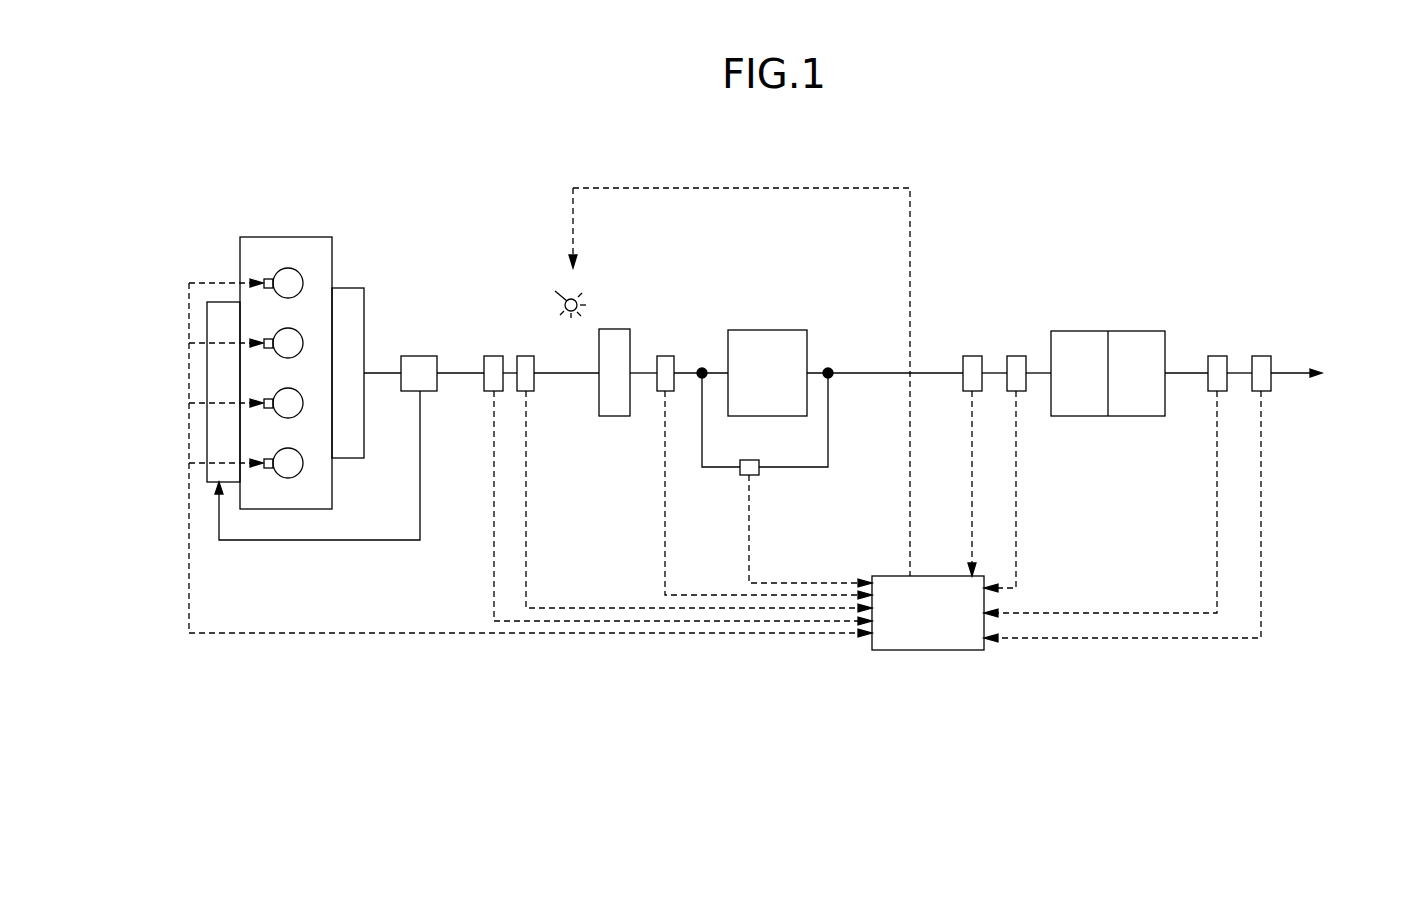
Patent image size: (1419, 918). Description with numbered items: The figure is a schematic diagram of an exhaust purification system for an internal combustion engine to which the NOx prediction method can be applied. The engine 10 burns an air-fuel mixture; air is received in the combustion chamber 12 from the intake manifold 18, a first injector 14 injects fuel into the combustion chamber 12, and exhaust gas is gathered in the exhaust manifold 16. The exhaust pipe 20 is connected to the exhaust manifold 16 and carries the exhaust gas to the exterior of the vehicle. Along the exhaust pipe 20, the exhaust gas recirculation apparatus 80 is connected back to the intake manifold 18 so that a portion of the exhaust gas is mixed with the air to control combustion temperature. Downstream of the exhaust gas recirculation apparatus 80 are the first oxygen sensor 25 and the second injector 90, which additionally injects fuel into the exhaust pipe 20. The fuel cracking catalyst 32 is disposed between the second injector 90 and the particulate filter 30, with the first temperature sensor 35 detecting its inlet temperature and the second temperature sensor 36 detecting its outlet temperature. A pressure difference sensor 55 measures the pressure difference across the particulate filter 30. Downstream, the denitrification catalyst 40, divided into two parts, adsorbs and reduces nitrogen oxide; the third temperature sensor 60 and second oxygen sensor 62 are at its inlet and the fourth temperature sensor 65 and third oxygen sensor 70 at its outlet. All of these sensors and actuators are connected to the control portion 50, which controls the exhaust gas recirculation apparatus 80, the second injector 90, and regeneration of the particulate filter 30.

The engine 10 is at (346, 204).
The combustion chamber 12 is at (293, 268).
The first injector 14 is at (266, 278).
The exhaust manifold 16 is at (356, 296).
The intake manifold 18 is at (208, 301).
The exhaust pipe 20 is at (451, 372).
The first oxygen sensor 25 is at (493, 355).
The particulate filter 30 is at (787, 280).
The fuel cracking catalyst 32 is at (619, 328).
The first temperature sensor 35 is at (526, 355).
The second temperature sensor 36 is at (666, 355).
The denitrification catalyst 40 is at (1129, 338).
The control portion 50 is at (946, 650).
The pressure difference sensor 55 is at (744, 470).
The third temperature sensor 60 is at (970, 355).
The second oxygen sensor 62 is at (1016, 355).
The fourth temperature sensor 65 is at (1218, 355).
The third oxygen sensor 70 is at (1262, 355).
The exhaust gas recirculation apparatus 80 is at (418, 355).
The second injector 90 is at (556, 291).